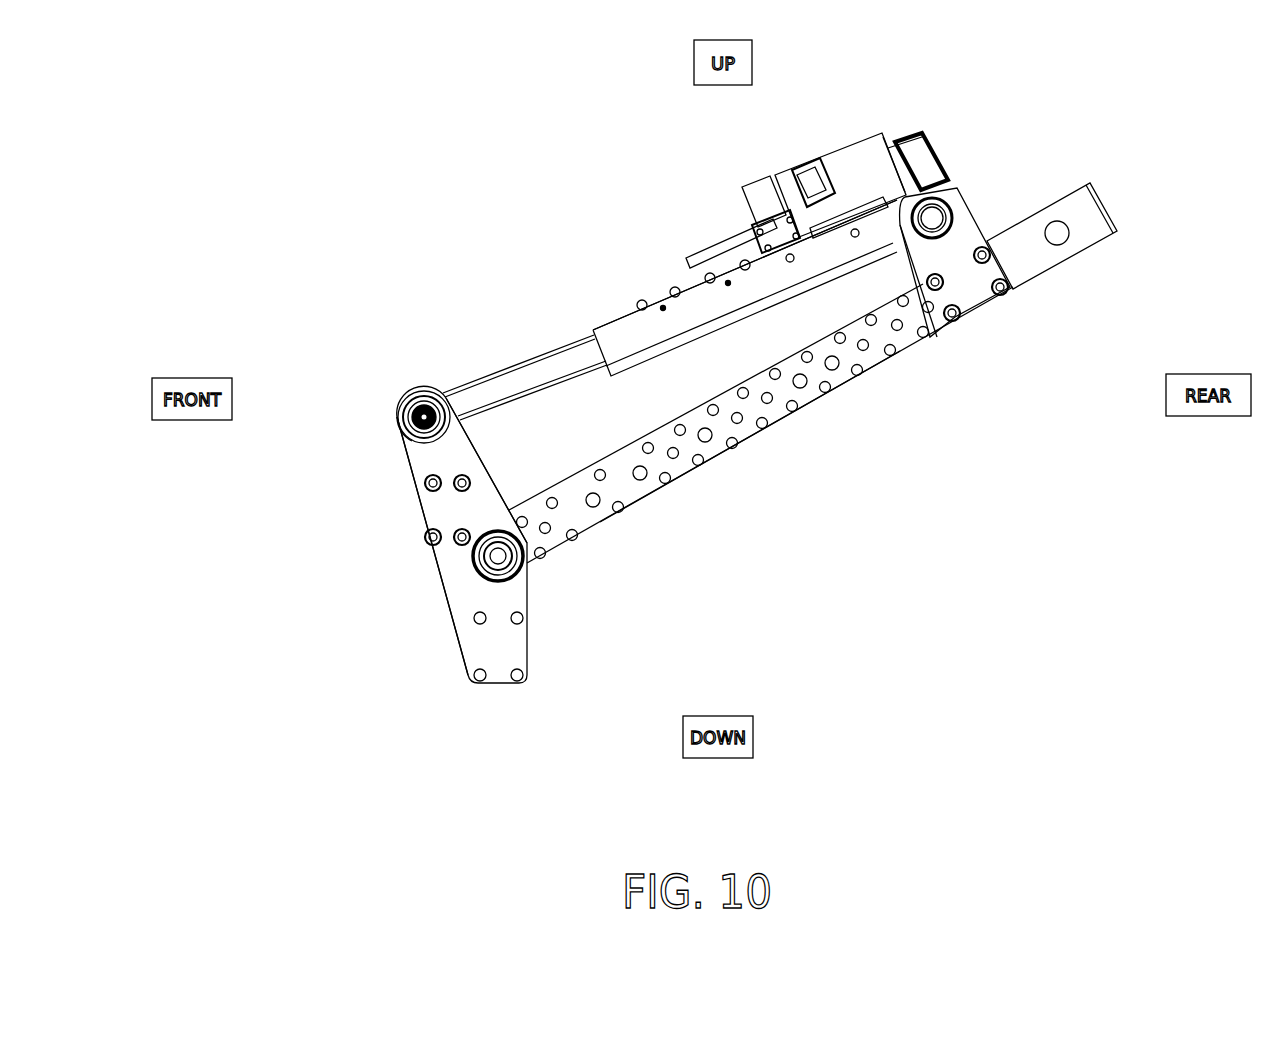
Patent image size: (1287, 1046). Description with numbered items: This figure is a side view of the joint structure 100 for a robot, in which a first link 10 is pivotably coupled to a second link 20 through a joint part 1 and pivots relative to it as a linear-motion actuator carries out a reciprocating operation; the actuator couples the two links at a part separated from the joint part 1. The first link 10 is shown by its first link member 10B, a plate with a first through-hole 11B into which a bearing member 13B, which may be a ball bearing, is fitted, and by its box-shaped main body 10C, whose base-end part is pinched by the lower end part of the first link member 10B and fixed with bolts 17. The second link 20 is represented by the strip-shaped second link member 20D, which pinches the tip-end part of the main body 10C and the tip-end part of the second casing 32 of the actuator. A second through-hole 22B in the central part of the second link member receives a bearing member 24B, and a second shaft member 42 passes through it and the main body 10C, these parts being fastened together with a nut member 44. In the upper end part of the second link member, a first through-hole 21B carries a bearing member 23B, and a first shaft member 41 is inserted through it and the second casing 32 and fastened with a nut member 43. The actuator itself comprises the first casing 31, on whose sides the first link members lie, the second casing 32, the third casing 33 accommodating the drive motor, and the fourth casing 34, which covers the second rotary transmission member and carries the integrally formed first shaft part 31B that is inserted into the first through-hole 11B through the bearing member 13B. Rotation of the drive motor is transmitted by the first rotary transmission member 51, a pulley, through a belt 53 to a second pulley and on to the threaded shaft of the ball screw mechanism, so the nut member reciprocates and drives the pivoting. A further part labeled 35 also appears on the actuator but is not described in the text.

The joint part 1 is at (523, 573).
The first link 10 is at (817, 410).
The first link member 10B is at (980, 290).
The main body 10C is at (747, 432).
The first through-hole 11B is at (912, 255).
The bearing member 13B is at (938, 268).
The bolts 17 is at (1012, 292).
The second link 20 is at (437, 597).
The second link member 20D is at (425, 505).
The first through-hole 21B is at (413, 387).
The second through-hole 22B is at (473, 573).
The bearing member 23B is at (412, 425).
The bearing member 24B is at (500, 583).
The first casing 31 is at (618, 330).
The first shaft part 31B is at (947, 215).
The second casing 32 is at (505, 383).
The third casing 33 is at (848, 180).
The fourth casing 34 is at (927, 178).
The guide rail 35 is at (883, 127).
The first shaft member 41 is at (427, 392).
The second shaft member 42 is at (473, 553).
The nut member 43 is at (398, 415).
The nut member 44 is at (533, 568).
The first rotary transmission member 51 is at (920, 153).
The belt 53 is at (913, 130).
The joint structure 100 is at (736, 29).